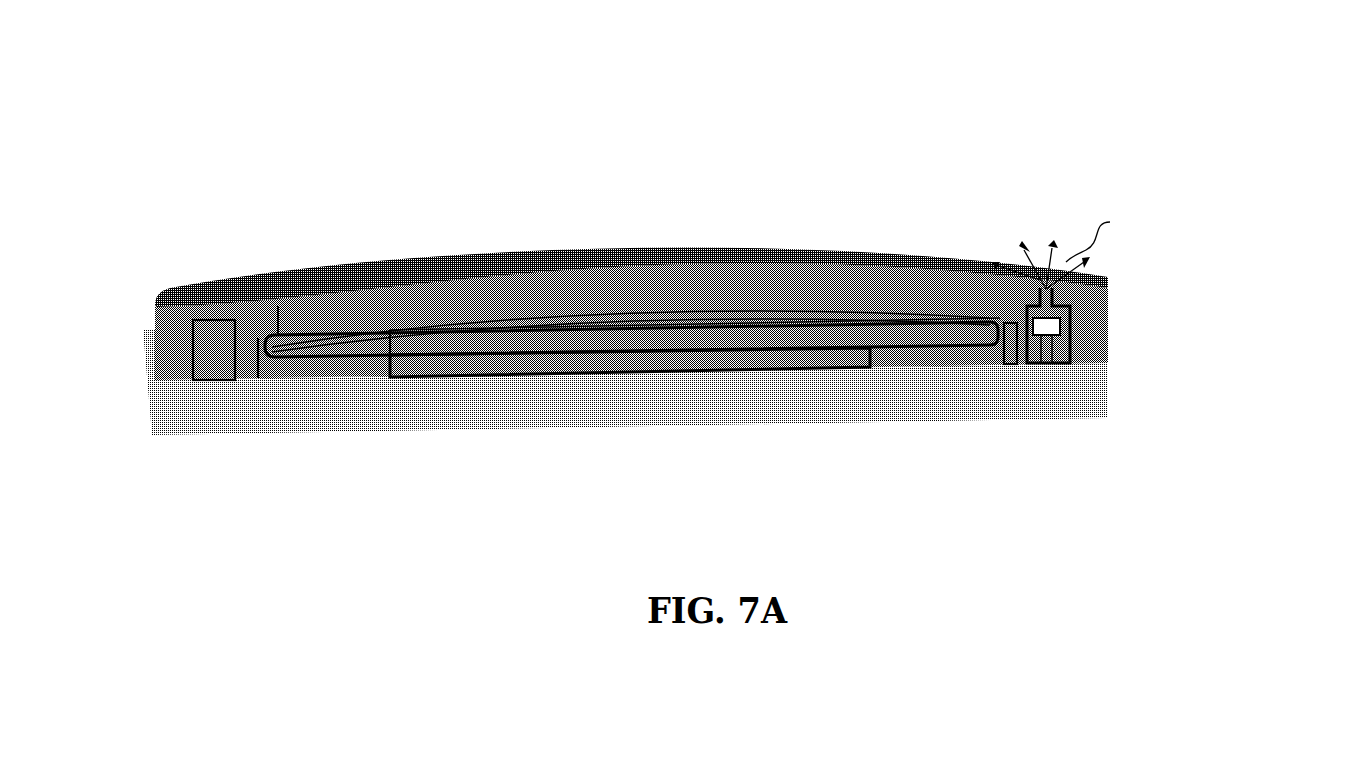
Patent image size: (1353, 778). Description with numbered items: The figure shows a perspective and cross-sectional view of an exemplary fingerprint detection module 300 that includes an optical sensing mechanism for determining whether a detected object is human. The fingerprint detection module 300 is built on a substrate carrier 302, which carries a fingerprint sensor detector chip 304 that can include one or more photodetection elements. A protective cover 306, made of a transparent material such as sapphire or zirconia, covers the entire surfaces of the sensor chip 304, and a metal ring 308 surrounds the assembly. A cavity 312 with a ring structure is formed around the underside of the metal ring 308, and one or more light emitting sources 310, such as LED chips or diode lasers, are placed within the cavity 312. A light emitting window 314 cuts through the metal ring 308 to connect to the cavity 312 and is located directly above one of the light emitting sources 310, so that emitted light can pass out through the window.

The fingerprint detection module 300 is at (868, 122).
The substrate carrier 302 is at (767, 392).
The fingerprint sensor detector chip 304 is at (857, 373).
The protective cover 306 is at (1010, 363).
The metal ring 308 is at (840, 280).
The light emitting sources 310 is at (1057, 325).
The cavity 312 is at (850, 300).
The light emitting window 314 is at (1092, 278).